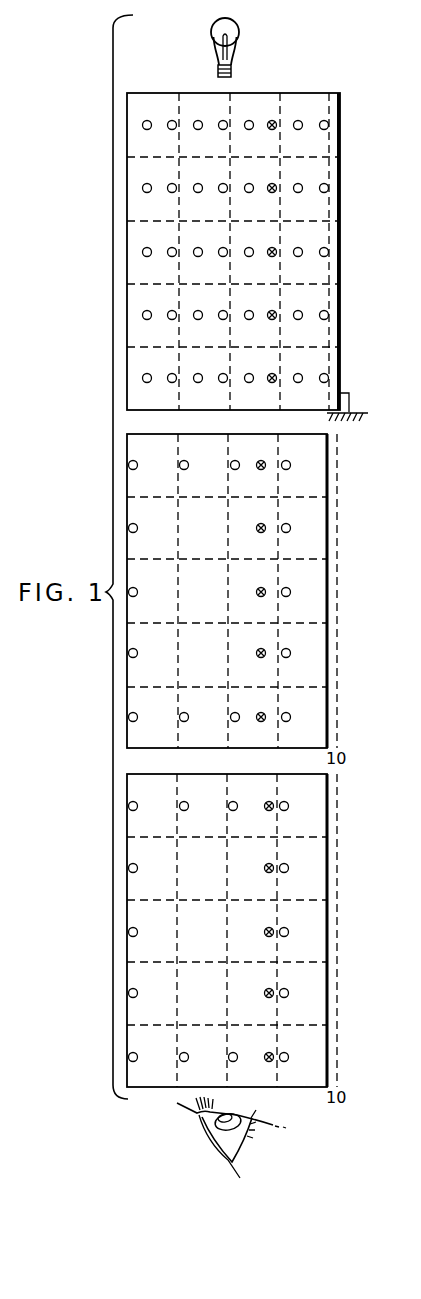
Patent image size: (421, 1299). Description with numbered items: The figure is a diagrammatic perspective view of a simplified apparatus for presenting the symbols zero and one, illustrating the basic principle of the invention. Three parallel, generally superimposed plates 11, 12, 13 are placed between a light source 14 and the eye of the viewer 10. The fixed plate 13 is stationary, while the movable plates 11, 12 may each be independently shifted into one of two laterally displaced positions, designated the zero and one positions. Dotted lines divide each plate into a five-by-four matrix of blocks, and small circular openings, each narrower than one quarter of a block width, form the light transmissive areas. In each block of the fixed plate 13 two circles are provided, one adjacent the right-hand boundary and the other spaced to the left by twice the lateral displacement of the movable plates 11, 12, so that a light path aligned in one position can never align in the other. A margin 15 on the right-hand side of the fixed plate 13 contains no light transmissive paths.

The eye of the viewer 10 is at (258, 1140).
The movable plate 11 is at (146, 766).
The movable plate 12 is at (154, 434).
The fixed plate 13 is at (148, 92).
The light source 14 is at (238, 42).
The margin 15 is at (333, 286).